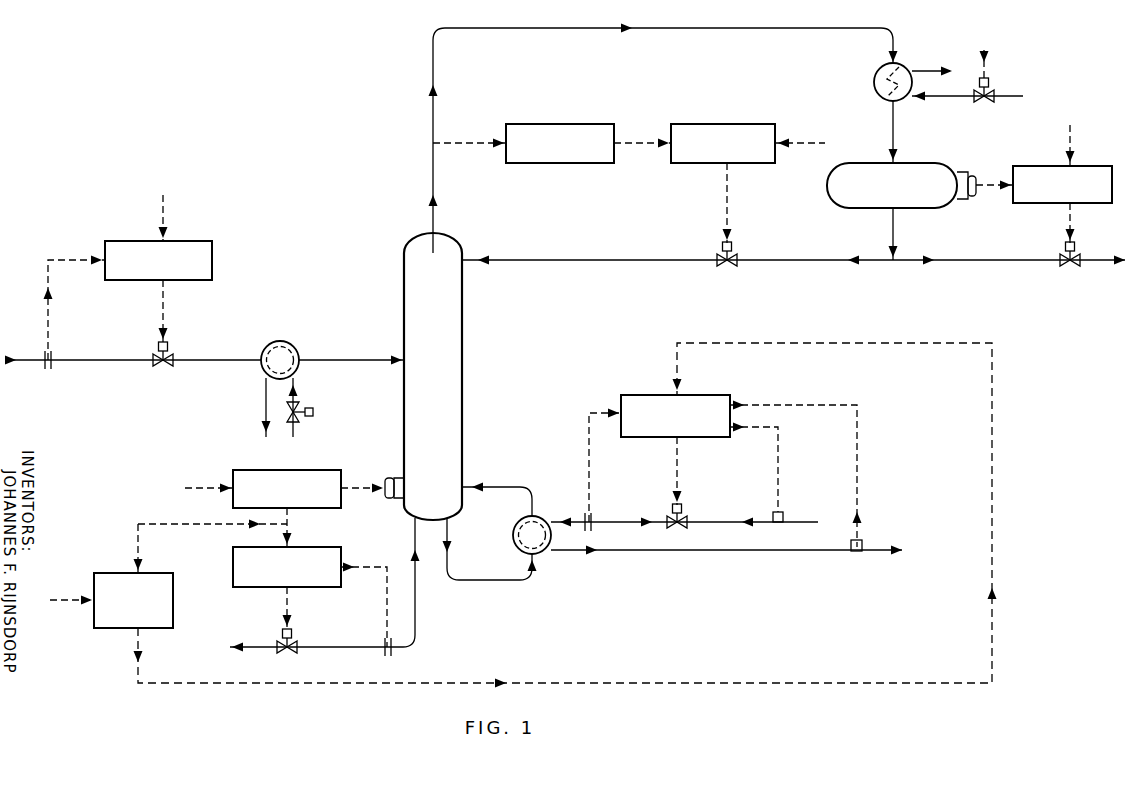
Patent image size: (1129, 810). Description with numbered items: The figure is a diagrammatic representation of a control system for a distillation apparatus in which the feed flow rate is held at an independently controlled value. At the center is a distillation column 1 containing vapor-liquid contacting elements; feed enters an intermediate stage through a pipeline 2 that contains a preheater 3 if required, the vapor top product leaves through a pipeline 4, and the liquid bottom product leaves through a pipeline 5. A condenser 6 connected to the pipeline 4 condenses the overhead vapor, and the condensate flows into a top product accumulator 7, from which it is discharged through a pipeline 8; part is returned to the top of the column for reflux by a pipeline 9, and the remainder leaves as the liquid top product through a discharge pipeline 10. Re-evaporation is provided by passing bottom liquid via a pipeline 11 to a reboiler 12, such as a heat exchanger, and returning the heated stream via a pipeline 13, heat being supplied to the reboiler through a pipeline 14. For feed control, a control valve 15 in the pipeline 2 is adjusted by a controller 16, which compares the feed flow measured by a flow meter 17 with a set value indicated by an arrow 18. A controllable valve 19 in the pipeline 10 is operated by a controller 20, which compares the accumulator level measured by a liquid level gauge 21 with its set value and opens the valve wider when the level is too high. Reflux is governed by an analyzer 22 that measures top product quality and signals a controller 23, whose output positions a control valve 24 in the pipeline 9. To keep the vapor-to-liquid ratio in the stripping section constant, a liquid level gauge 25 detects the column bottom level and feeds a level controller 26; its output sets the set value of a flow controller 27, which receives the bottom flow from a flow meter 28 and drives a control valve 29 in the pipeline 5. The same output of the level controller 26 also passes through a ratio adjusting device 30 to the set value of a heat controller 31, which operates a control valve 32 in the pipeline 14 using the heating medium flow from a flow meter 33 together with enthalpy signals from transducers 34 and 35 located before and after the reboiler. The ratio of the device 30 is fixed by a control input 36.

The distillation column 1 is at (425, 391).
The feed pipeline 2 is at (341, 359).
The preheater 3 is at (284, 342).
The top product discharge pipeline 4 is at (436, 118).
The bottom product pipeline 5 is at (416, 618).
The condenser 6 is at (876, 77).
The top product accumulator 7 is at (915, 165).
The accumulator discharge pipeline 8 is at (896, 240).
The reflux pipeline 9 is at (797, 259).
The top product discharge pipeline 10 is at (998, 263).
The reboiler feed pipeline 11 is at (485, 580).
The reboiler 12 is at (514, 521).
The reboiler return pipeline 13 is at (494, 487).
The heating medium flow line 14 is at (630, 522).
The feed control valve 15 is at (172, 357).
The feed flow controller 16 is at (212, 262).
The feed flow meter 17 is at (43, 364).
The set value input arrow 18 is at (163, 218).
The top product control valve 19 is at (1072, 272).
The accumulator level controller 20 is at (1090, 166).
The accumulator liquid level gauge 21 is at (975, 200).
The analyzer 22 is at (571, 124).
The top product quality controller 23 is at (735, 124).
The reflux control valve 24 is at (738, 256).
The column bottom liquid level gauge 25 is at (382, 502).
The level controller 26 is at (303, 470).
The bottom product flow controller 27 is at (308, 547).
The bottom product flow meter 28 is at (391, 655).
The bottom product control valve 29 is at (290, 655).
The ratio adjusting device 30 is at (160, 573).
The heat controller 31 is at (692, 395).
The heating medium control valve 32 is at (684, 518).
The heating medium flow meter 33 is at (592, 530).
The inlet enthalpy transducer 34 is at (784, 515).
The outlet enthalpy transducer 35 is at (862, 545).
The ratio control input 36 is at (66, 598).